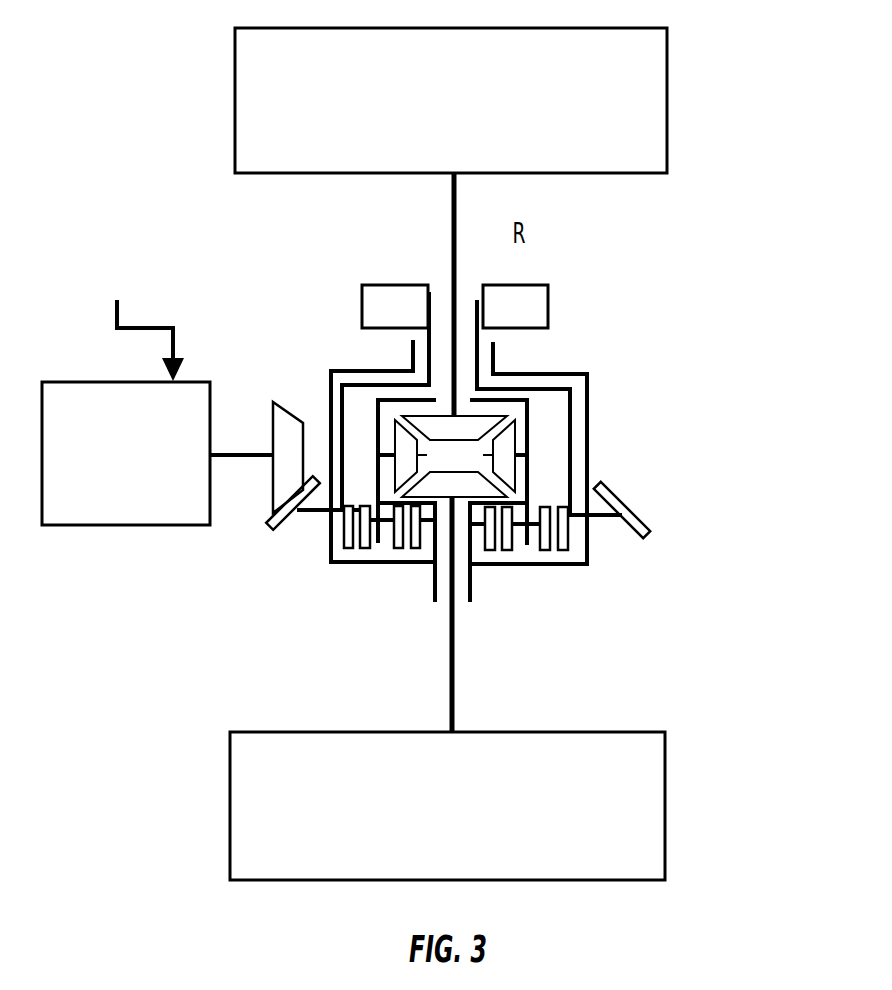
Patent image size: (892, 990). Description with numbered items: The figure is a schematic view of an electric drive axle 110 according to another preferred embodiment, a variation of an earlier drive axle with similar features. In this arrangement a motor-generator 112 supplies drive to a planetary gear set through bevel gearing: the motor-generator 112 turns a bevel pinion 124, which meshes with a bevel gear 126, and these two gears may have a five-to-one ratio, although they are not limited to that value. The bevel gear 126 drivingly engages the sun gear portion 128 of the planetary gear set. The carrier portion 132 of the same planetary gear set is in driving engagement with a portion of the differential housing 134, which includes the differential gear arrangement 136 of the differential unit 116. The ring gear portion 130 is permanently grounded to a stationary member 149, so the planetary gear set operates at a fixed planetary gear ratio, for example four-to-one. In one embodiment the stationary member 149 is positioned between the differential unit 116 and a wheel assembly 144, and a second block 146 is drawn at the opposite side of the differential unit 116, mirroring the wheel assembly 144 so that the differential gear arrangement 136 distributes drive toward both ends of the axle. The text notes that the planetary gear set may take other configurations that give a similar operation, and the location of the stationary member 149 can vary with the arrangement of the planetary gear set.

The electric drive axle 110 is at (746, 436).
The motor-generator 112 is at (157, 396).
The differential unit 116 is at (581, 350).
The bevel pinion 124 is at (288, 412).
The bevel gear 126 is at (271, 534).
The sun gear portion 128 is at (413, 552).
The ring gear portion 130 is at (347, 552).
The carrier portion 132 is at (533, 527).
The differential housing 134 is at (571, 415).
The differential gear arrangement 136 is at (438, 470).
The wheel assembly 144 is at (462, 115).
The lower block 146 is at (438, 816).
The stationary member 149 is at (412, 284).